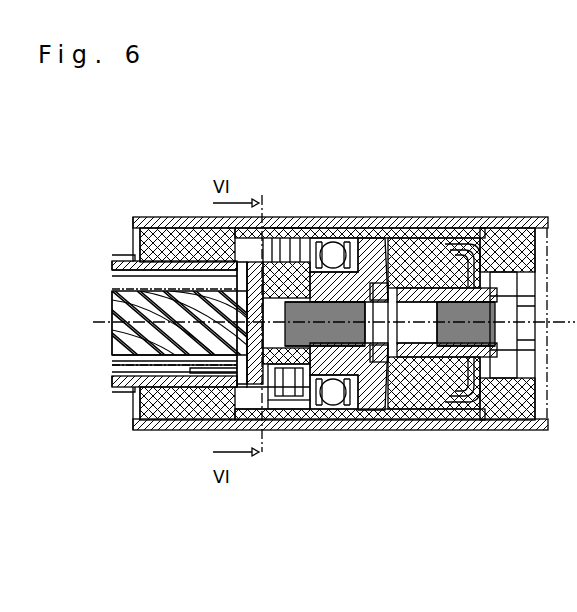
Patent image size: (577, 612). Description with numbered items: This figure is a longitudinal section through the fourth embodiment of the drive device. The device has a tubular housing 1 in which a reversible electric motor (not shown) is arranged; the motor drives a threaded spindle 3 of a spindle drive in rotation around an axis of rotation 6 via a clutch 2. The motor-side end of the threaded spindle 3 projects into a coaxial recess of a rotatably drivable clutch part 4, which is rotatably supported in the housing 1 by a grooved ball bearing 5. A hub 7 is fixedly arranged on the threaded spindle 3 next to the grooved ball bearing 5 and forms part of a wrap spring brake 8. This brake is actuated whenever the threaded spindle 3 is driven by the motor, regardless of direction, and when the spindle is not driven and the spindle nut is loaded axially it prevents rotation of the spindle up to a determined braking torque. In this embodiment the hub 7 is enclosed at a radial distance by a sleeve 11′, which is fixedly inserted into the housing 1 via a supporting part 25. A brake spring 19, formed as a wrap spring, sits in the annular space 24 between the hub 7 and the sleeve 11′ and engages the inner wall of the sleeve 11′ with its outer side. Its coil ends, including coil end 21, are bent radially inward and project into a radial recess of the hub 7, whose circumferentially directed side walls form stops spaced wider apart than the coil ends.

The tubular housing 1 is at (510, 221).
The clutch 2 is at (462, 222).
The threaded spindle 3 is at (143, 343).
The clutch part 4 is at (410, 250).
The grooved ball bearing 5 is at (332, 218).
The axis of rotation 6 is at (170, 308).
The hub 7 is at (133, 223).
The wrap spring brake 8 is at (303, 432).
The sleeve 11′ is at (272, 240).
The brake spring 19 is at (272, 430).
The coil end 21 is at (320, 427).
The annular space 24 is at (228, 236).
The supporting part 25 is at (248, 262).